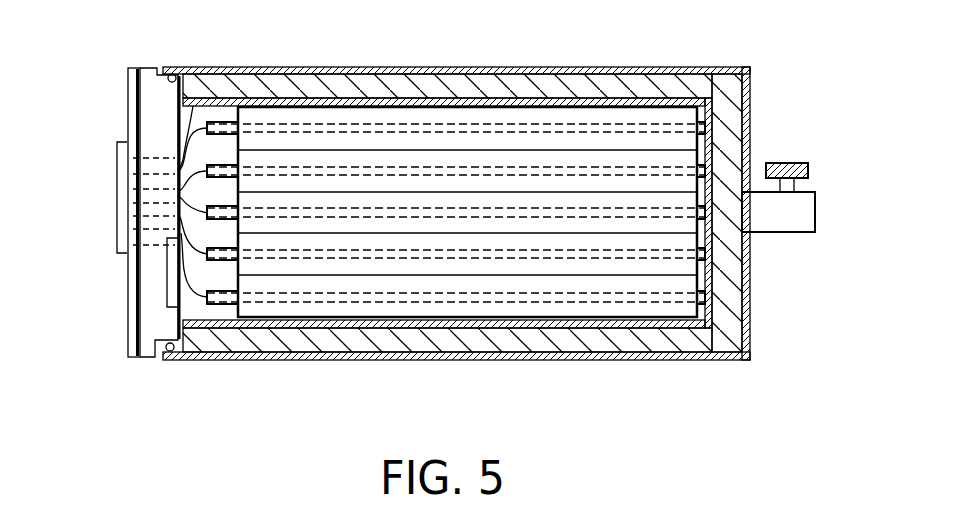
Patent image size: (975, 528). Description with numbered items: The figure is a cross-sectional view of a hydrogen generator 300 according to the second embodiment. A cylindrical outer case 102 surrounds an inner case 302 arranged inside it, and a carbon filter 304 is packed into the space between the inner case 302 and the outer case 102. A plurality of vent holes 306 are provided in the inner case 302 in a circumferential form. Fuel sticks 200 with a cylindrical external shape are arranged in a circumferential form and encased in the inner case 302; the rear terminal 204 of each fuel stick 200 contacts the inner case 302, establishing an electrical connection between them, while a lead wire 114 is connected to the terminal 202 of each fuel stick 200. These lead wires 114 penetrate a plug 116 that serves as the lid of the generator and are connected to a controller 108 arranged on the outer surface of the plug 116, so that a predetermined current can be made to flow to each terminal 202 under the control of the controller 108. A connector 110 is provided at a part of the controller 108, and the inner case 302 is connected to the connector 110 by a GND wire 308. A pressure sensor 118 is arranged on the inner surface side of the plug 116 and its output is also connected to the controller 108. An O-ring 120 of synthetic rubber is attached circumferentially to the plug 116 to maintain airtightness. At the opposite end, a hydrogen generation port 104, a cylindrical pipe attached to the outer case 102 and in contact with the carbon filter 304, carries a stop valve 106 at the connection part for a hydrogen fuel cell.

The outer case 102 is at (652, 361).
The hydrogen generation port 104 is at (817, 215).
The stop valve 106 is at (787, 167).
The controller 108 is at (134, 87).
The connector 110 is at (118, 188).
The lead wire 114 is at (190, 288).
The plug 116 is at (150, 90).
The pressure sensor 118 is at (172, 280).
The O-ring 120 is at (174, 73).
The fuel stick 200 is at (508, 198).
The terminal 202 is at (225, 297).
The rear terminal 204 is at (708, 103).
The hydrogen generator 300 is at (464, 214).
The inner case 302 is at (582, 340).
The carbon filter 304 is at (453, 333).
The vent holes 306 is at (335, 100).
The GND wire 308 is at (188, 118).